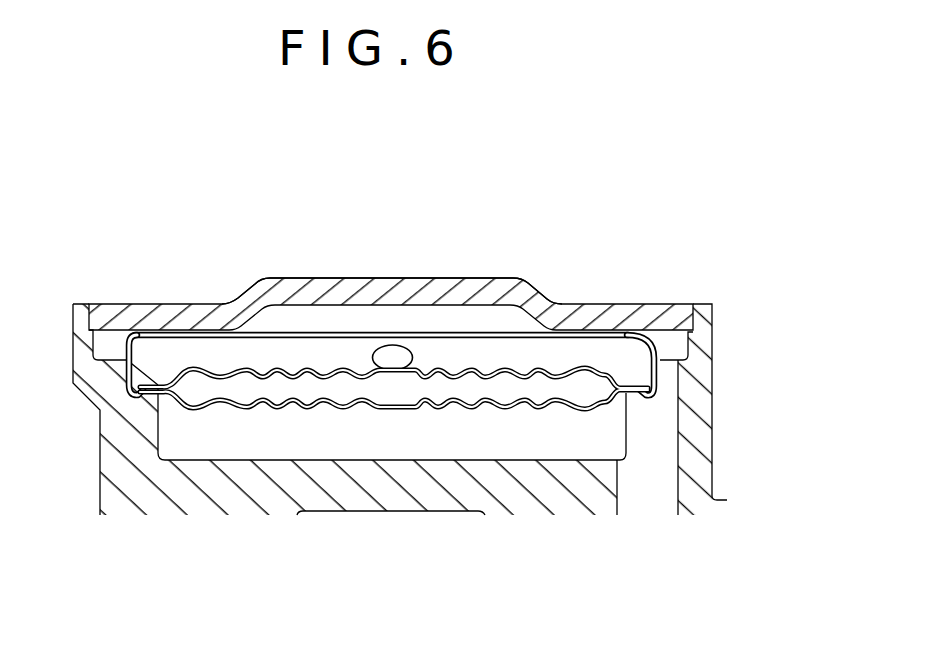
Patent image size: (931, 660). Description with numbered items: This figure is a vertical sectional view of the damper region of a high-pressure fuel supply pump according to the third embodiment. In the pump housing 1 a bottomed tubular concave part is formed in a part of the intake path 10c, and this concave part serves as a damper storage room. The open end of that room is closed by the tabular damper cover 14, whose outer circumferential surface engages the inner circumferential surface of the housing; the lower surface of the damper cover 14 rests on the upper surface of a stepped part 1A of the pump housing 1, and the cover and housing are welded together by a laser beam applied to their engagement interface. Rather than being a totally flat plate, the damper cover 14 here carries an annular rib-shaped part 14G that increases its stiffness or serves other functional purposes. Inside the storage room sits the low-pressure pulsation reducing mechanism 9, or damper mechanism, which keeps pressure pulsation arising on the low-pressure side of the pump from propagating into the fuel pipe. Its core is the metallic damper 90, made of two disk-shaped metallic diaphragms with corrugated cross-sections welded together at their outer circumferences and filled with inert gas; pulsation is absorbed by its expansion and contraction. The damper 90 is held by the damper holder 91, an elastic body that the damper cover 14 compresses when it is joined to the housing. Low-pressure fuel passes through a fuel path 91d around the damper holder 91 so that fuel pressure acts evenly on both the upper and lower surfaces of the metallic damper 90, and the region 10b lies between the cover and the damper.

The pump housing 1 is at (400, 441).
The stepped part 1A is at (383, 515).
The low-pressure pulsation reducing mechanism 9 is at (367, 258).
The gap 10b is at (440, 340).
The intake path 10c is at (508, 432).
The damper cover 14 is at (391, 243).
The annular rib-shaped part 14G is at (355, 288).
The metallic damper 90 is at (332, 373).
The damper holder 91 is at (364, 289).
The fuel path 91d is at (395, 348).